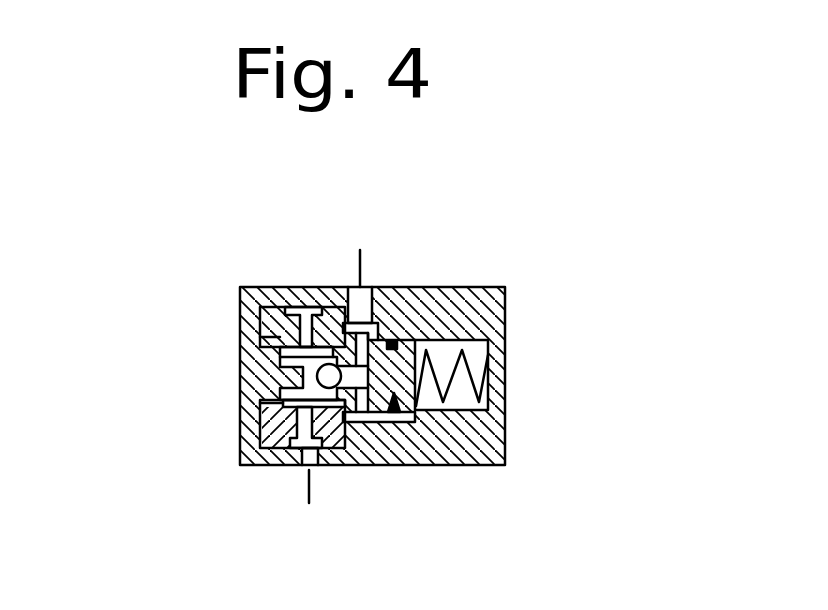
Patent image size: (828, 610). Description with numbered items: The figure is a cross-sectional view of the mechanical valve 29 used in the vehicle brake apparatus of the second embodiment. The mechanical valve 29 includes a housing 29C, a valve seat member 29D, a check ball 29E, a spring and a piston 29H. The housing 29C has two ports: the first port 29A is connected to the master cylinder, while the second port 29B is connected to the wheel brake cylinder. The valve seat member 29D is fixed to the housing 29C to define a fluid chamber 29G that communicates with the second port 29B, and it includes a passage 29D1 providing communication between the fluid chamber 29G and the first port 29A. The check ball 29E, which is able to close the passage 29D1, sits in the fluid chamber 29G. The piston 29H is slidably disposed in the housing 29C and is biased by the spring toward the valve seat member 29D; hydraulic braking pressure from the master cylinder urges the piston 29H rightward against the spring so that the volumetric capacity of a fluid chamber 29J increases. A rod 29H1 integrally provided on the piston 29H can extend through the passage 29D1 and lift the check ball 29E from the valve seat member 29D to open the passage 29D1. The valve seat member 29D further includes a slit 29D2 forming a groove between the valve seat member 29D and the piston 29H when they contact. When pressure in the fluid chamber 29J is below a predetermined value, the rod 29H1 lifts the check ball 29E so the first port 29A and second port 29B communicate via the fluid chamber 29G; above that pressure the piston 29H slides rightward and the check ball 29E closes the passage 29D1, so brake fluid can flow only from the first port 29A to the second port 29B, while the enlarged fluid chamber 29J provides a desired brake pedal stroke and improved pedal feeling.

The mechanical valve 29 is at (547, 273).
The first port 29A is at (368, 288).
The second port 29B is at (307, 462).
The housing 29C is at (492, 440).
The valve seat member 29D is at (275, 430).
The passage 29D1 is at (370, 378).
The slit 29D2 is at (385, 418).
The check ball 29E is at (331, 390).
The fluid chamber 29G is at (295, 350).
The piston 29H is at (396, 412).
The rod 29H1 is at (400, 341).
The fluid chamber 29J is at (380, 335).